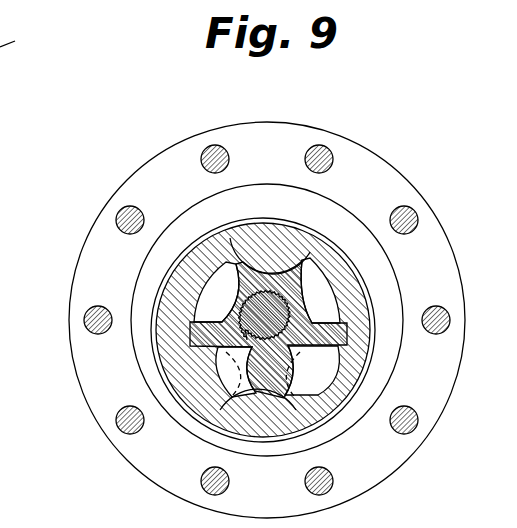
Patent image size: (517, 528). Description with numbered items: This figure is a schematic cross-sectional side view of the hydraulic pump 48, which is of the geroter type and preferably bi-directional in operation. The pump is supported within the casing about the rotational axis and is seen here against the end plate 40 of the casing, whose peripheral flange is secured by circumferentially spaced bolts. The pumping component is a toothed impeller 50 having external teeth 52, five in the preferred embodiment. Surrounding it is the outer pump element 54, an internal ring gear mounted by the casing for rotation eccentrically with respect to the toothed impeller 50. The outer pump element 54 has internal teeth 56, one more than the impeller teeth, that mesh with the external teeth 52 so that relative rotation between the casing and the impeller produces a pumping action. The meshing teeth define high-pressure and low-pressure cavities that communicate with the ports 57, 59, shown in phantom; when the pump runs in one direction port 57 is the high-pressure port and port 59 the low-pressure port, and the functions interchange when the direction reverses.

The end plate 40 is at (210, 124).
The hydraulic pump 48 is at (160, 367).
The toothed impeller 50 is at (292, 368).
The external teeth 52 is at (316, 276).
The outer pump element 54 is at (366, 300).
The internal teeth 56 is at (268, 272).
The high-pressure port 57 is at (180, 255).
The low-pressure port 59 is at (367, 408).